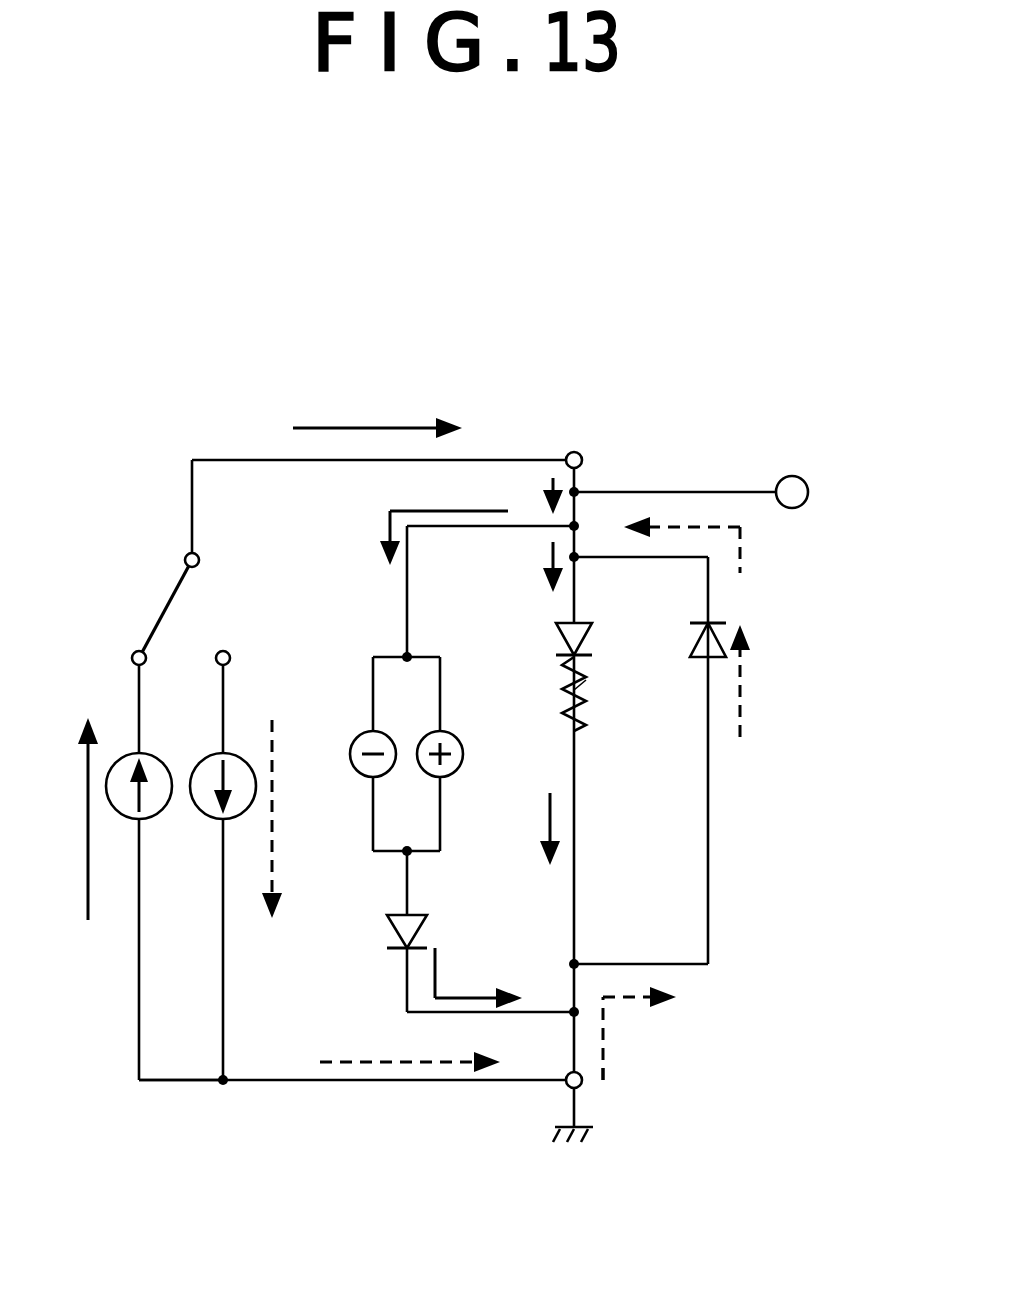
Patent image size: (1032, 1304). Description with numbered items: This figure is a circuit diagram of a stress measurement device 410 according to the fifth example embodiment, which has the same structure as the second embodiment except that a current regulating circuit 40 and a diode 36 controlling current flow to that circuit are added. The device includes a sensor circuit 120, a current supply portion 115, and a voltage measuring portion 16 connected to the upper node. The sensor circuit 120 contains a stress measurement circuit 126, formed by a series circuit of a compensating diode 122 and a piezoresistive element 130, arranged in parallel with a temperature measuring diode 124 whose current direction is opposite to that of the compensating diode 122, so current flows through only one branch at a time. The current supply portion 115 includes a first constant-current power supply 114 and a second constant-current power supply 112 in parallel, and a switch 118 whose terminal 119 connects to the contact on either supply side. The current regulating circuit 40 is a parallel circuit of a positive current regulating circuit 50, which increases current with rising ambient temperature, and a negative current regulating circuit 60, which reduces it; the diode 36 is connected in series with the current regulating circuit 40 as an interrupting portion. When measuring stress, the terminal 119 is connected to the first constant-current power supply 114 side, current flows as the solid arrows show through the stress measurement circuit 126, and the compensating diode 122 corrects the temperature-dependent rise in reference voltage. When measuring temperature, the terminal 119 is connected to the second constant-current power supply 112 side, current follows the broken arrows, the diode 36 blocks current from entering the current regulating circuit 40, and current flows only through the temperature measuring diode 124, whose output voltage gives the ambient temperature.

The stress measurement device 410 is at (686, 367).
The voltage measuring portion 16 is at (808, 492).
The diode 36 is at (418, 936).
The current regulating circuit 40 is at (430, 640).
The positive current regulating circuit 50 is at (462, 754).
The negative current regulating circuit 60 is at (352, 742).
The second constant-current power supply 112 is at (255, 786).
The first constant-current power supply 114 is at (165, 805).
The current supply portion 115 is at (177, 1100).
The switch 118 is at (258, 578).
The terminal 119 is at (223, 652).
The sensor circuit 120 is at (694, 990).
The compensating diode 122 is at (588, 640).
The temperature measuring diode 124 is at (716, 660).
The stress measurement circuit 126 is at (552, 678).
The piezoresistive element 130 is at (584, 700).